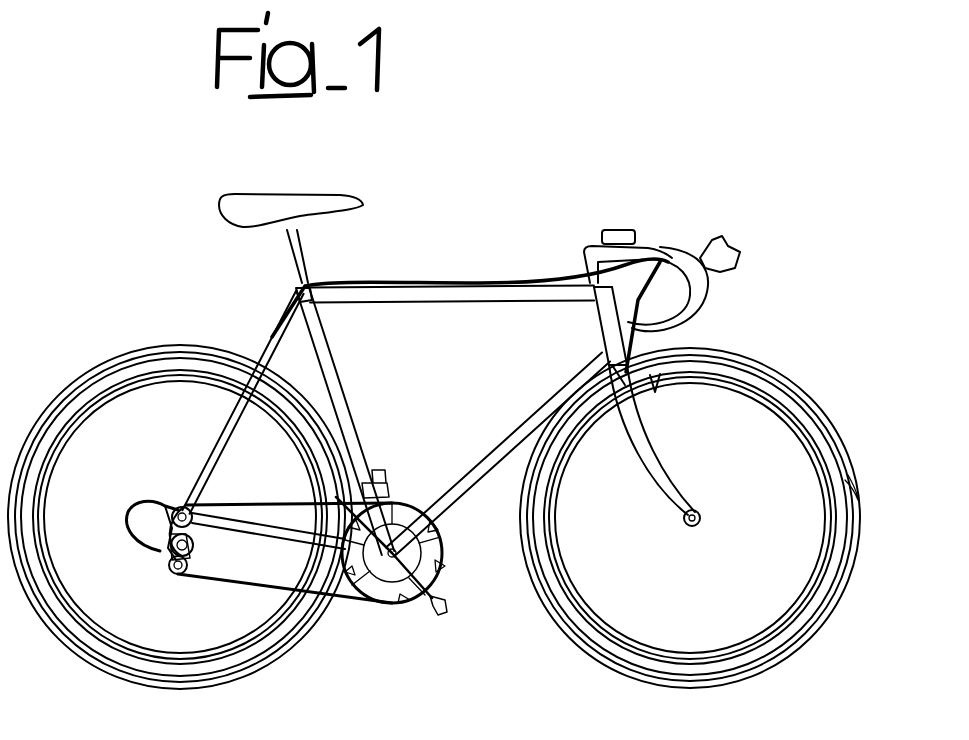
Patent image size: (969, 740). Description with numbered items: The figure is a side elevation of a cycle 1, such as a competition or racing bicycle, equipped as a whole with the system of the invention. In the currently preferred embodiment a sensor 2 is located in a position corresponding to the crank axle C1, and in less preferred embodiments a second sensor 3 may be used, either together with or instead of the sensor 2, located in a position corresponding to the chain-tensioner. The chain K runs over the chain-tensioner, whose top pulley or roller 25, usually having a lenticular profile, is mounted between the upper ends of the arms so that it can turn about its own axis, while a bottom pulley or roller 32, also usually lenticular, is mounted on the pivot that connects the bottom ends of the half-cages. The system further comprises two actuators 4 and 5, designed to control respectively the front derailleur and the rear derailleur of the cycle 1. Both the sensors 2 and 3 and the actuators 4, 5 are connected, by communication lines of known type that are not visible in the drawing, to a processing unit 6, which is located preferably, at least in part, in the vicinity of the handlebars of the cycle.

The cycle 1 is at (549, 228).
The sensor 2 is at (400, 502).
The second sensor 3 is at (176, 573).
The actuator 4 is at (380, 478).
The actuator 5 is at (160, 548).
The processing unit 6 is at (623, 232).
The top pulley 25 is at (194, 543).
The bottom pulley 32 is at (189, 567).
The chain K is at (251, 584).
The crank axle C1 is at (356, 592).